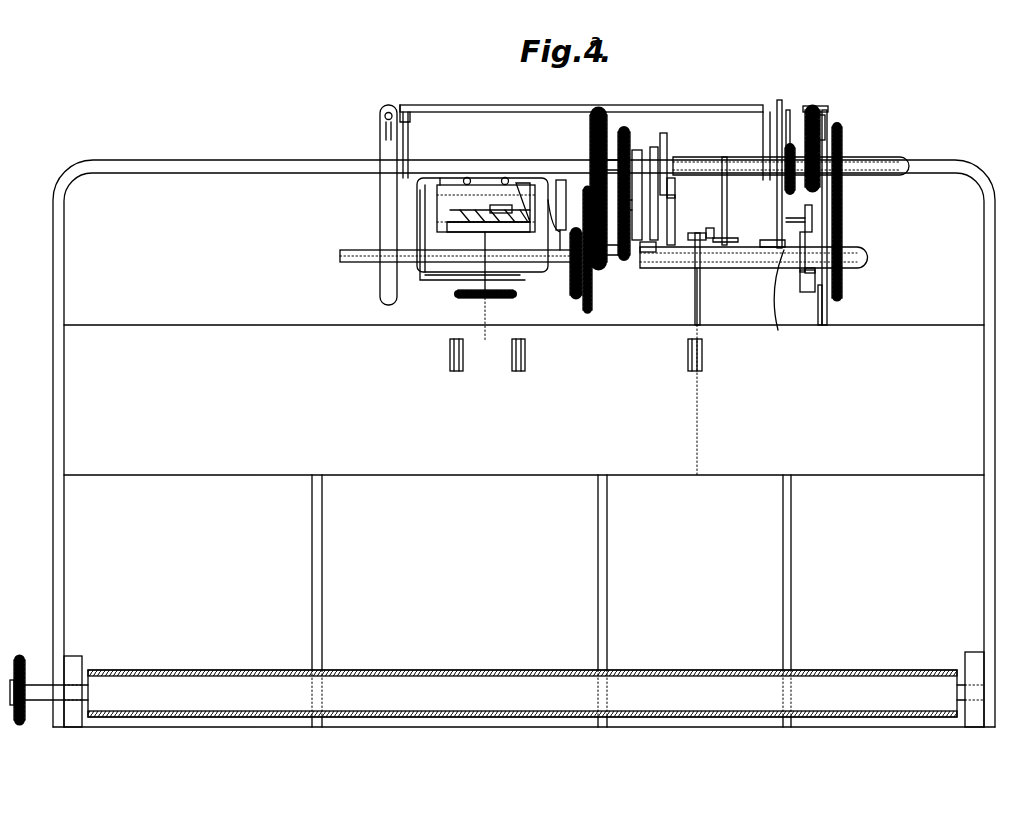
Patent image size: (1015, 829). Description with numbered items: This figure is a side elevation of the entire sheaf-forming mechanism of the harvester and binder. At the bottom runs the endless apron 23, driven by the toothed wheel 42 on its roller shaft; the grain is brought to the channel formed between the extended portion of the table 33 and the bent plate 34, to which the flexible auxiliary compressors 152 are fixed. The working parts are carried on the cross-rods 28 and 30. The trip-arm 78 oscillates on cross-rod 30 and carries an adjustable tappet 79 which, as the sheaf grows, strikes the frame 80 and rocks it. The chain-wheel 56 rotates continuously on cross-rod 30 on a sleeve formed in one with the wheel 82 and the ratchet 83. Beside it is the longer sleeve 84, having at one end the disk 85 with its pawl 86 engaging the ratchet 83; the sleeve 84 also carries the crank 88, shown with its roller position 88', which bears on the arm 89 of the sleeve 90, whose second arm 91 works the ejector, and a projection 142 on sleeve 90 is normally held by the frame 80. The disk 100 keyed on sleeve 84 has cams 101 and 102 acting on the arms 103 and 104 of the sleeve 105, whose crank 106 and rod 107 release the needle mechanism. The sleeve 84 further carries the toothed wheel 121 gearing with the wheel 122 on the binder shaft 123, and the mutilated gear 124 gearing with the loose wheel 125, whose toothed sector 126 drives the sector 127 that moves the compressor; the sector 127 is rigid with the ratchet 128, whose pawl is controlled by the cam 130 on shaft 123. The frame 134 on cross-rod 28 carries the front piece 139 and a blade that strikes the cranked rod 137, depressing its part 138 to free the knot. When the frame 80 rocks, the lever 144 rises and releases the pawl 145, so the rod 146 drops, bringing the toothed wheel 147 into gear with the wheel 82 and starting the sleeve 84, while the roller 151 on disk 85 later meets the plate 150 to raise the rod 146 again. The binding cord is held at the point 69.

The apron 23 is at (205, 670).
The cross-rod 28 is at (352, 262).
The cross-rod 30 is at (282, 163).
The extended portion of the table 33 is at (551, 601).
The bent plate 34 is at (237, 475).
The toothed wheel 42 is at (24, 675).
The chain-wheel 56 is at (845, 137).
The cord-holding point 69 is at (485, 286).
The trip-arm 78 is at (380, 187).
The tappet 79 is at (413, 132).
The frame 80 is at (522, 108).
The wheel 82 is at (822, 130).
The ratchet 83 is at (791, 148).
The sleeve 84 is at (705, 158).
The disk 85 is at (777, 105).
The pawl 86 is at (788, 118).
The crank 88 is at (742, 201).
The arm 88' is at (661, 127).
The arm 89 is at (715, 242).
The sleeve 90 is at (760, 268).
The arm 91 is at (846, 268).
The disk 100 is at (658, 148).
The cam 101 is at (670, 150).
The cam 102 is at (642, 150).
The arm 103 is at (693, 189).
The arm 104 is at (715, 210).
The sleeve 105 is at (670, 296).
The crank 106 is at (661, 240).
The rod 107 is at (702, 291).
The toothed wheel 121 is at (630, 140).
The wheel 122 is at (652, 243).
The shaft 123 is at (447, 208).
The mutilated gear 124 is at (605, 128).
The toothed wheel 125 is at (640, 274).
The toothed sector 126 is at (561, 180).
The toothed sector 127 is at (604, 256).
The ratchet 128 is at (570, 292).
The cam 130 is at (470, 178).
The frame 134 is at (435, 180).
The cranked rod 137 is at (558, 232).
The depressing part 138 is at (445, 280).
The front piece 139 is at (495, 183).
The projection 142 is at (767, 292).
The lever 144 is at (818, 300).
The pawl 145 is at (812, 293).
The vertical rod 146 is at (830, 212).
The toothed wheel 147 is at (815, 110).
The plate 150 is at (828, 109).
The roller 151 is at (812, 228).
The auxiliary compressor 152 is at (517, 357).